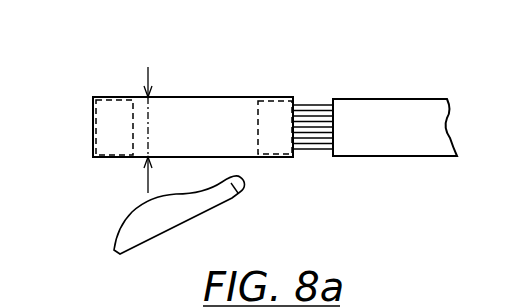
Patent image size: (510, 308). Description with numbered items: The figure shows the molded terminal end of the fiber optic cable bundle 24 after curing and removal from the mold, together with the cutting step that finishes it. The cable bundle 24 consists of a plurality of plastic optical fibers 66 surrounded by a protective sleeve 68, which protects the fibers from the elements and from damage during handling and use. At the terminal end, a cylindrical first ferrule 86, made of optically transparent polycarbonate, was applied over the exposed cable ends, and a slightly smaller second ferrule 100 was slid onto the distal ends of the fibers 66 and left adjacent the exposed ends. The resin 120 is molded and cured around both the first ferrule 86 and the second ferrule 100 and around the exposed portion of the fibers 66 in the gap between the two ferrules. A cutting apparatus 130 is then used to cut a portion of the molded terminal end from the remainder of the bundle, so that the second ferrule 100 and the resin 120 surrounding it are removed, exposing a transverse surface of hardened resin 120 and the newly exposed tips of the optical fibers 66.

The fiber optic cable bundle 24 is at (428, 75).
The plastic optical fibers 66 is at (312, 102).
The protective sleeve 68 is at (373, 107).
The first ferrule 86 is at (262, 100).
The second ferrule 100 is at (93, 117).
The resin 120 is at (199, 103).
The cutting apparatus 130 is at (171, 219).